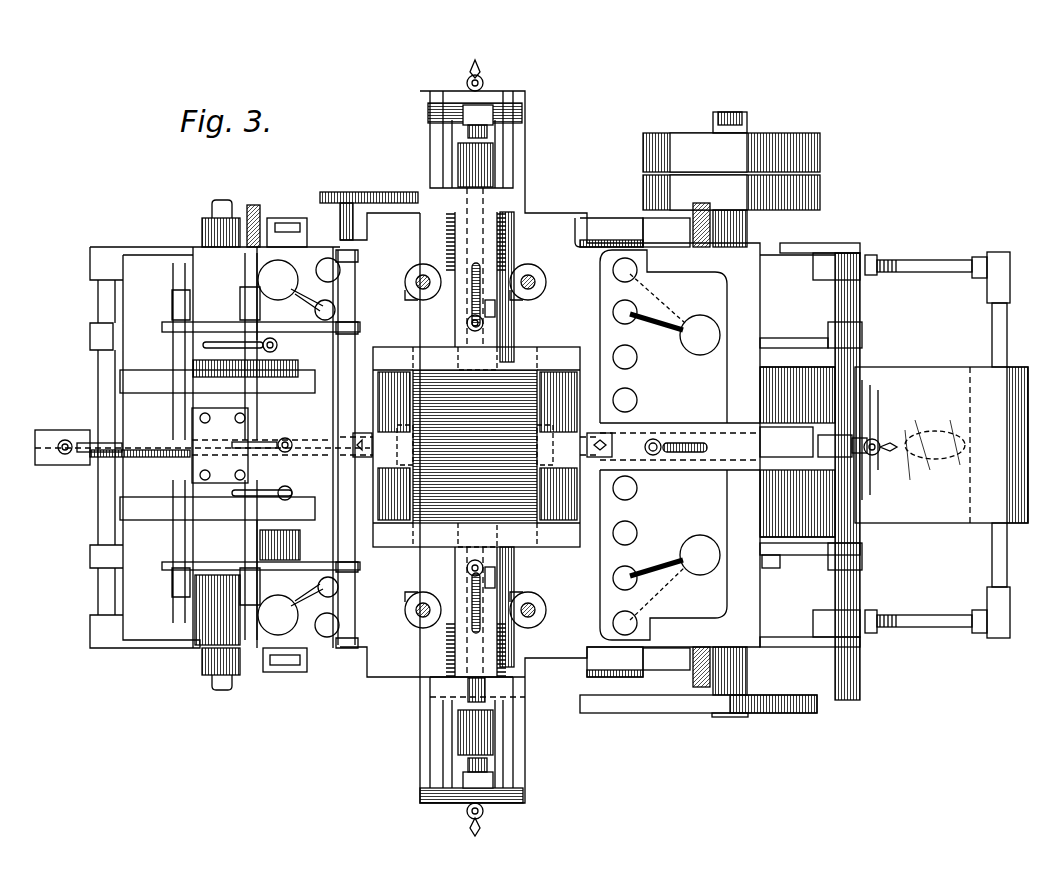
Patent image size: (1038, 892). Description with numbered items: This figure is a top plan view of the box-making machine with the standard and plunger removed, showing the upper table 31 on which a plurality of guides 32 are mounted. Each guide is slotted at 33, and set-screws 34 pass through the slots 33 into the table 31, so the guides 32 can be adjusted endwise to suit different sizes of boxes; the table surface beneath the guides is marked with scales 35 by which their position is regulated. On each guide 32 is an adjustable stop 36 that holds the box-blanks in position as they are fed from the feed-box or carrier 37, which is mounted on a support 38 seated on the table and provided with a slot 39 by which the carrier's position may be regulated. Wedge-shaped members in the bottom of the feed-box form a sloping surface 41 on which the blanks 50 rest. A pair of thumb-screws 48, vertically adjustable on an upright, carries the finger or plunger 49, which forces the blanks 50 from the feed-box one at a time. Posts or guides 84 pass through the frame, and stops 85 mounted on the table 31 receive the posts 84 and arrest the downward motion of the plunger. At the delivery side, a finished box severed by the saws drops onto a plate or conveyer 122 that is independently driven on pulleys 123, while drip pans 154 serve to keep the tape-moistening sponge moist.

The upper table 31 is at (750, 315).
The guides 32 is at (490, 270).
The slots 33 is at (470, 290).
The set-screws 34 is at (466, 325).
The scales 35 is at (455, 250).
The stop 36 is at (495, 307).
The feed-box 37 is at (355, 335).
The support 38 is at (130, 345).
The slot 39 is at (225, 348).
The sloping surface 41 is at (150, 380).
The thumb-screws 48 is at (150, 428).
The plunger 49 is at (215, 460).
The blanks 50 is at (205, 413).
The posts 84 is at (548, 285).
The stops 85 is at (418, 282).
The conveyer 122 is at (915, 512).
The pulleys 123 is at (935, 450).
The drip pans 154 is at (702, 325).